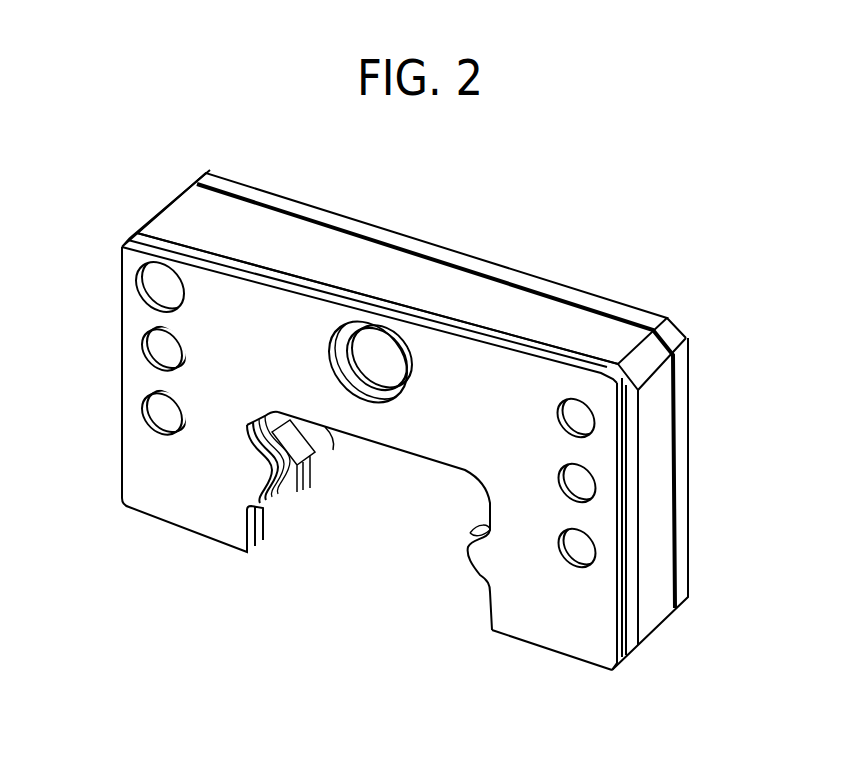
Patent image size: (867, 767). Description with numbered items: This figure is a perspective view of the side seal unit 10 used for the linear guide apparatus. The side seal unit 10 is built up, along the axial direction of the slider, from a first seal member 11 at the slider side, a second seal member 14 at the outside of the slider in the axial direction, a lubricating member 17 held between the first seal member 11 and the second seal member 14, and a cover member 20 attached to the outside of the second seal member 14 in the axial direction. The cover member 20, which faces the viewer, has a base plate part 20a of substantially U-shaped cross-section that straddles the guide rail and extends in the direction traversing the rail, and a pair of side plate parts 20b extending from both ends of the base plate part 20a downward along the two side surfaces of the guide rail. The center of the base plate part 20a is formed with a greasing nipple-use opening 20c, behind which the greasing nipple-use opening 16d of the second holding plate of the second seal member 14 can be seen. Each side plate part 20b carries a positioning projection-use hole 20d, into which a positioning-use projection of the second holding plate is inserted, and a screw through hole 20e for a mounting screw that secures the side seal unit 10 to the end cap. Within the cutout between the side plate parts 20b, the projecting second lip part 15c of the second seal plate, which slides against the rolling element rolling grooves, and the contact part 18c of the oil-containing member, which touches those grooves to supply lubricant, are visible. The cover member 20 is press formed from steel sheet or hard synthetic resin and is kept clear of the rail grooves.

The side seal unit 10 is at (435, 400).
The first seal member 11 is at (688, 373).
The second seal member 14 is at (183, 225).
The second lip part 15c is at (282, 502).
The greasing nipple-use opening 16d is at (353, 343).
The lubricating member 17 is at (605, 318).
The contact part 18c is at (305, 450).
The cover member 20 is at (389, 435).
The base plate part 20a is at (427, 425).
The side plate part 20b is at (198, 507).
The greasing nipple-use opening 20c is at (338, 366).
The positioning projection-use hole 20d is at (150, 350).
The screw through hole 20e is at (150, 412).